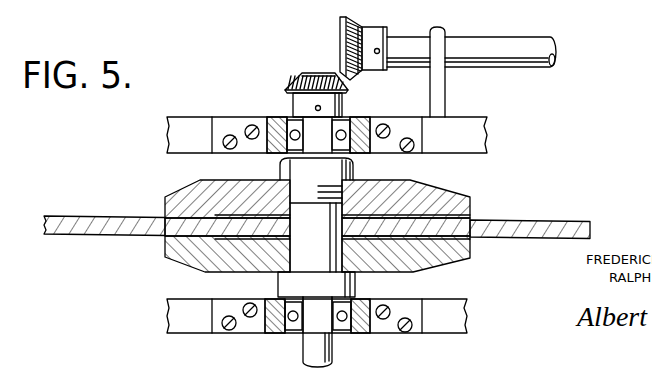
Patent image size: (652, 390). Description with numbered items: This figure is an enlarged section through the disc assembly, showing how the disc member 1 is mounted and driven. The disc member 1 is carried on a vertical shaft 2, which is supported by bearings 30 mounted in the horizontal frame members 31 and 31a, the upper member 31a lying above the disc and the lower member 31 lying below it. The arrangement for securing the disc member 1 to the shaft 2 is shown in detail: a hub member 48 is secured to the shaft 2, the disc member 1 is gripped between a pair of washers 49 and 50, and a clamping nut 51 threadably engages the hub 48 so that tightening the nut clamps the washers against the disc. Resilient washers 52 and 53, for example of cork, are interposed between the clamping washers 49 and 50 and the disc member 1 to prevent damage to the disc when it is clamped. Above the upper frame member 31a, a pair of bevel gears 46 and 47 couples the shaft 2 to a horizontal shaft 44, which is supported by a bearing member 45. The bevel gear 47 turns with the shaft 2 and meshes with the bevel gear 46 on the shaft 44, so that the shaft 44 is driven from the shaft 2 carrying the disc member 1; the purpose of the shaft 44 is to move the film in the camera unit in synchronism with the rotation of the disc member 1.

The disc member 1 is at (590, 230).
The shaft 2 is at (307, 349).
The bearings 30 is at (288, 118).
The horizontal frame member 31 is at (195, 326).
The horizontal frame member 31a is at (192, 129).
The shaft 44 is at (512, 45).
The bearing member 45 is at (441, 33).
The bevel gear 46 is at (343, 34).
The bevel gear 47 is at (290, 80).
The hub member 48 is at (292, 280).
The washer 49 is at (470, 258).
The washer 50 is at (470, 197).
The clamping nut 51 is at (357, 170).
The resilient washer 52 is at (470, 238).
The resilient washer 53 is at (470, 217).